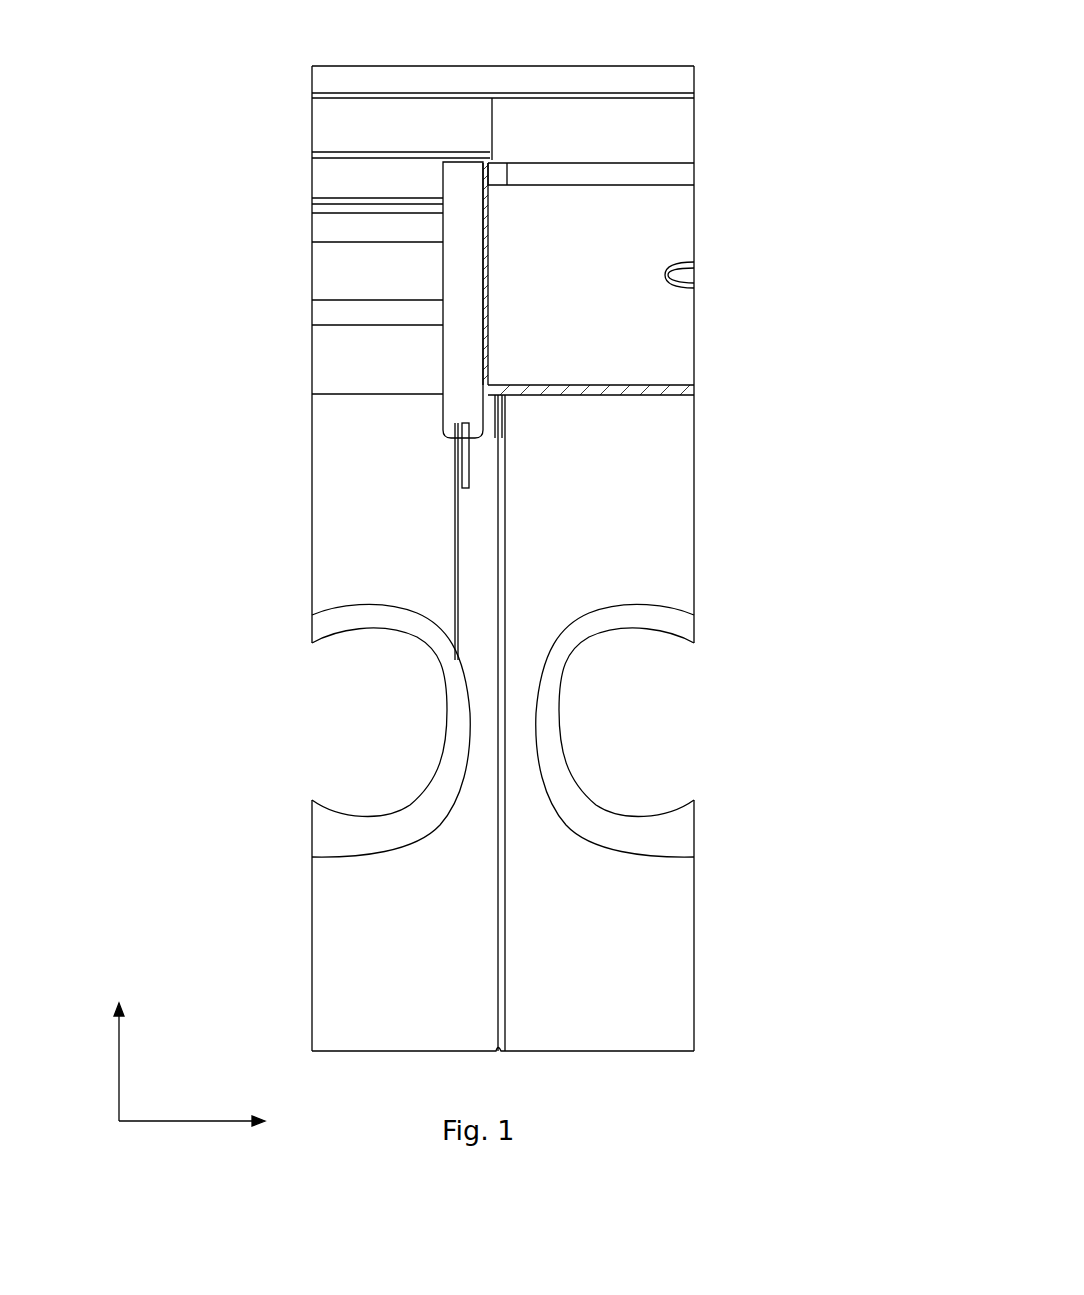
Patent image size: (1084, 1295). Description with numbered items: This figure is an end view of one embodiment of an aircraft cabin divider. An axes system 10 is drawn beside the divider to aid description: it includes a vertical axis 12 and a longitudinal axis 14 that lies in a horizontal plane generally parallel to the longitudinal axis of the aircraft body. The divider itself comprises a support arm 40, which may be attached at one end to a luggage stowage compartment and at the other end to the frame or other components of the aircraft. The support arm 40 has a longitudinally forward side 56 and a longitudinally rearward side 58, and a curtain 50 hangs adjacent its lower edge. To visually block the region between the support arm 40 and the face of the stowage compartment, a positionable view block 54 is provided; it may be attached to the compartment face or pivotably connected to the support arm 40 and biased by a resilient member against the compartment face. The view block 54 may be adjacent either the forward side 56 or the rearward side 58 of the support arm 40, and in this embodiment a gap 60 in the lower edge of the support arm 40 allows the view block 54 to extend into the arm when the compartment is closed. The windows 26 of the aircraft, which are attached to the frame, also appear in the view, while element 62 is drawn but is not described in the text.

The aircraft structure / direction 10 is at (155, 1081).
The vertical direction 12 is at (119, 1077).
The horizontal direction 14 is at (209, 1124).
The frame loop 26 is at (430, 797).
The wall panel assembly 40 is at (440, 368).
The plate 50 is at (452, 557).
The bracket rail 54 is at (483, 425).
The bar 56 is at (437, 177).
The seal strip 58 is at (490, 214).
The fastener block 60 is at (465, 425).
The handle 62 is at (695, 268).